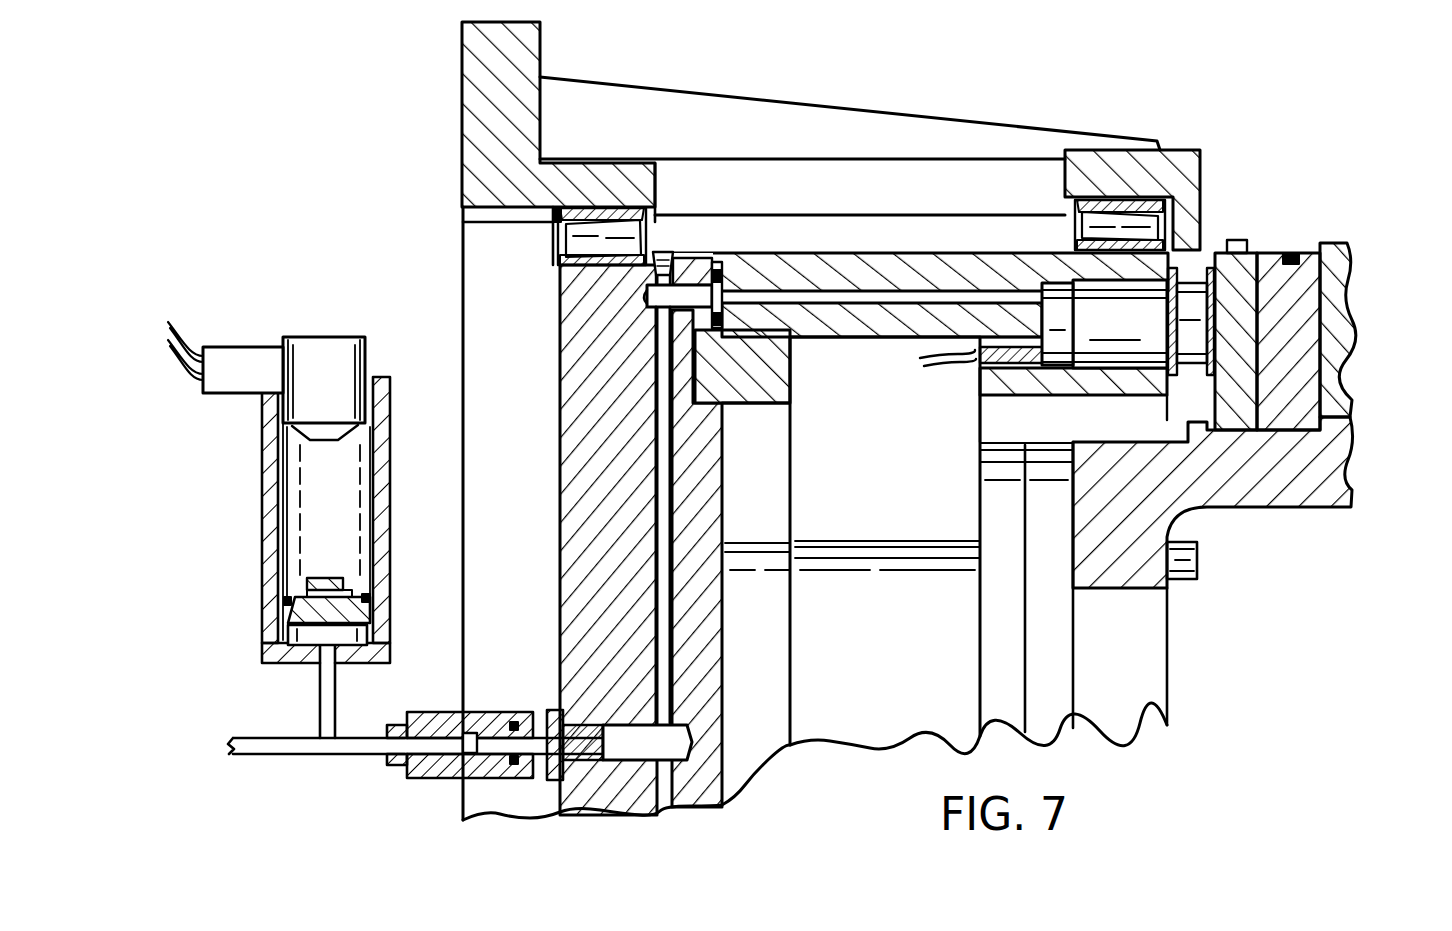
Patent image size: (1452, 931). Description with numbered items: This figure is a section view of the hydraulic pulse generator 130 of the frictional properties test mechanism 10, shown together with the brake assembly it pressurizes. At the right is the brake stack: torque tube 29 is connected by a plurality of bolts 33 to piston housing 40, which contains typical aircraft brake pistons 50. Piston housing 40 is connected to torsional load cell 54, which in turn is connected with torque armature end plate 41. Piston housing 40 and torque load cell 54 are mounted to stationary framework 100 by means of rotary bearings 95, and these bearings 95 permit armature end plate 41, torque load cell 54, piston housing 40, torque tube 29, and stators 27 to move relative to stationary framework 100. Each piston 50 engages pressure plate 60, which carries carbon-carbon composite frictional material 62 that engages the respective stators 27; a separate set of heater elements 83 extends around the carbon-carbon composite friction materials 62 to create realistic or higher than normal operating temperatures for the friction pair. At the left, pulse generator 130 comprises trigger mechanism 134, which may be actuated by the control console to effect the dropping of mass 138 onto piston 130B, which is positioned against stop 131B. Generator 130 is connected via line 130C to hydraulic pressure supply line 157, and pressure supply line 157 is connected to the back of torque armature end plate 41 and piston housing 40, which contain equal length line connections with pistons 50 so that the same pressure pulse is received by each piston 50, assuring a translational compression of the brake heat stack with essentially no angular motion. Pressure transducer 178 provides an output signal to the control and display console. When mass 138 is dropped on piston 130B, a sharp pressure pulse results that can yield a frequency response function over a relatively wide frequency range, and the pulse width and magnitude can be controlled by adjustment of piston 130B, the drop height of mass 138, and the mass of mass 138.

The test mechanism 10 is at (370, 162).
The stationary framework 100 is at (761, 118).
The rotary bearings 95 is at (565, 236).
The piston housing 40 is at (893, 262).
The torque armature end plate 41 is at (565, 470).
The pressure transducer 178 is at (977, 380).
The pistons 50 is at (1152, 338).
The torsional load cell 54 is at (910, 665).
The pressure plate 60 is at (1244, 262).
The heater elements 83 is at (1293, 252).
The carbon-carbon composite frictional material 62 is at (1310, 258).
The stators 27 is at (1355, 266).
The torque tube 29 is at (1270, 503).
The bolts 33 is at (1200, 562).
The pulse generator 130 is at (279, 505).
The trigger mechanism 134 is at (238, 350).
The mass 138 is at (323, 342).
The stop 131B is at (283, 592).
The piston 130B is at (283, 630).
The line 130C is at (318, 705).
The hydraulic pressure supply line 157 is at (312, 750).